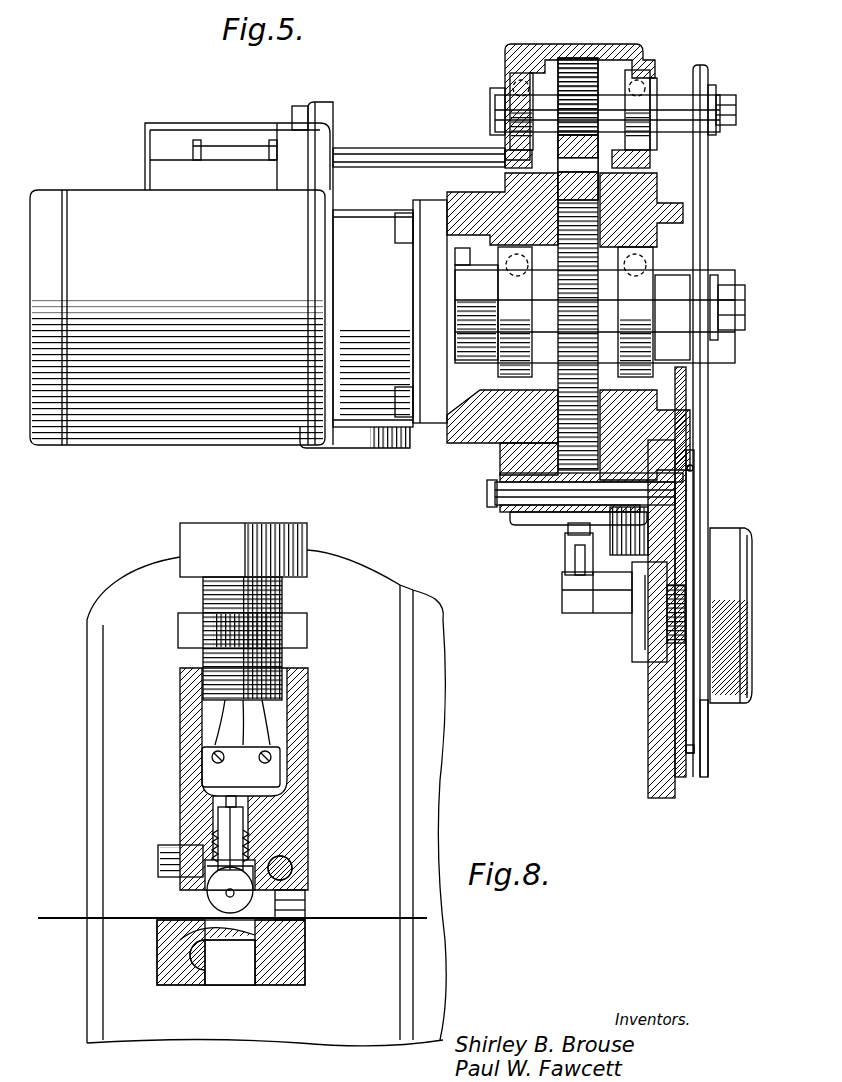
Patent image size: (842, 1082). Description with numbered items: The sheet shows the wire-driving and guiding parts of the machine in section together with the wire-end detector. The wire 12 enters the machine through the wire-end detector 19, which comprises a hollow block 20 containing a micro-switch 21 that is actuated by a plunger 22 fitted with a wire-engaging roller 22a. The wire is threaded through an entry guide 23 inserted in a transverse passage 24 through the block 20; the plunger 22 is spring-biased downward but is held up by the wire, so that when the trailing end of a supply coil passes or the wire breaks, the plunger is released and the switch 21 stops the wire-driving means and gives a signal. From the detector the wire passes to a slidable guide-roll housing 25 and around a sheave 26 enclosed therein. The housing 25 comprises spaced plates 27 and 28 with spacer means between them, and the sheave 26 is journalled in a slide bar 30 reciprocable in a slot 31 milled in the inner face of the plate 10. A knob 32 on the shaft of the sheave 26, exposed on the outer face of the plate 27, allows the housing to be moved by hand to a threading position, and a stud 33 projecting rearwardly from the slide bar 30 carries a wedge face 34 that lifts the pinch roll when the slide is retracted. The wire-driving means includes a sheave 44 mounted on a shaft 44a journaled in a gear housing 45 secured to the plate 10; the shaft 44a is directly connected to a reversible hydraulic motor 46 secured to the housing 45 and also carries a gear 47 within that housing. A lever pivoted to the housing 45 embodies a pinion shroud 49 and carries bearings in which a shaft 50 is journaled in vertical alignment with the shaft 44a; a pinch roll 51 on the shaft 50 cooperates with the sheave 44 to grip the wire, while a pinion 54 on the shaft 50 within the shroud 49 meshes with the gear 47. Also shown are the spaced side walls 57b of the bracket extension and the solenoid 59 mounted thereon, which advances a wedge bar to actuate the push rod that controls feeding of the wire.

In FIG. 5, the plate 10 is at (655, 762).
In FIG. 8, the wire 12 is at (42, 918).
In FIG. 8, the wire-end detector 19 is at (317, 855).
In FIG. 8, the hollow block 20 is at (310, 759).
In FIG. 8, the micro-switch 21 is at (202, 768).
In FIG. 8, the plunger 22 is at (218, 815).
In FIG. 8, the wire-engaging roller 22a is at (255, 895).
In FIG. 8, the entry guide 23 is at (172, 933).
In FIG. 8, the transverse passage 24 is at (300, 935).
In FIG. 5, the slidable guide-roll housing 25 is at (700, 476).
In FIG. 5, the sheave 26 is at (692, 755).
In FIG. 5, the plate 27 is at (710, 740).
In FIG. 5, the plate 28 is at (675, 705).
In FIG. 5, the slide bar 30 is at (640, 640).
In FIG. 5, the slot 31 is at (660, 668).
In FIG. 5, the knob 32 is at (712, 545).
In FIG. 5, the stud 33 is at (572, 612).
In FIG. 5, the wedge face 34 is at (565, 585).
In FIG. 5, the sheave 44 is at (708, 216).
In FIG. 5, the shaft 44a is at (447, 362).
In FIG. 5, the gear housing 45 is at (517, 443).
In FIG. 5, the reversible hydraulic motor 46 is at (177, 317).
In FIG. 5, the gear 47 is at (563, 450).
In FIG. 5, the pinion shroud 49 is at (612, 98).
In FIG. 5, the shaft 50 is at (627, 98).
In FIG. 5, the pinch roll 51 is at (712, 92).
In FIG. 5, the pinion 54 is at (572, 80).
In FIG. 5, the side walls 57b is at (434, 140).
In FIG. 5, the solenoid 59 is at (226, 150).